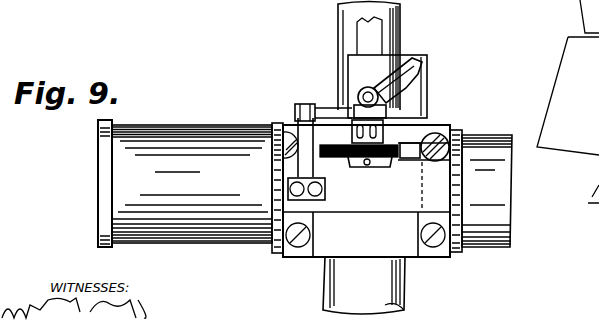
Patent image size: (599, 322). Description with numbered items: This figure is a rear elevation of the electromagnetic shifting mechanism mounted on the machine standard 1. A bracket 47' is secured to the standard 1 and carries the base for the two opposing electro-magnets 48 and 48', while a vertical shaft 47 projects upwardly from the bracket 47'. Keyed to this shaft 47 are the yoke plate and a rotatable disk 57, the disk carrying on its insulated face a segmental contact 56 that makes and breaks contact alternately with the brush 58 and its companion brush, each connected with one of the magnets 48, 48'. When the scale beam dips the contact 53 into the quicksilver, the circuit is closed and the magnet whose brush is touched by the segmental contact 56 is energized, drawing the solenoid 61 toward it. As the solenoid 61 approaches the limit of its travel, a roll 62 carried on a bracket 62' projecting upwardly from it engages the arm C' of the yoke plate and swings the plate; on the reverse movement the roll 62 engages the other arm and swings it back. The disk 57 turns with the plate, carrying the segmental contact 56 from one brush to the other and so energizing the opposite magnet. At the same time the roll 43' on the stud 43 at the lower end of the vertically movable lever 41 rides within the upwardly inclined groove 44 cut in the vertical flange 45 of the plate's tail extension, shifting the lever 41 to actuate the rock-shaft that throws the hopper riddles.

The standard 1 is at (337, 285).
The vertically movable lever 41 is at (372, 38).
The projecting stud 43 is at (335, 96).
The roll 43' is at (384, 105).
The upwardly inclined irregular groove or slot 44 is at (408, 59).
The vertical flange 45 is at (368, 75).
The vertical shaft 47 is at (359, 166).
The bracket 47' is at (399, 166).
The electro-magnet 48 is at (166, 187).
The electro-magnet 48' is at (501, 194).
The contact 53 is at (322, 156).
The segmental contact 56 is at (394, 134).
The rotatable disk 57 is at (352, 160).
The brush 58 is at (415, 160).
The solenoid 61 is at (393, 202).
The roll 62 is at (305, 111).
The bracket 62' is at (271, 175).
The arm of the yoke plate C' is at (280, 93).